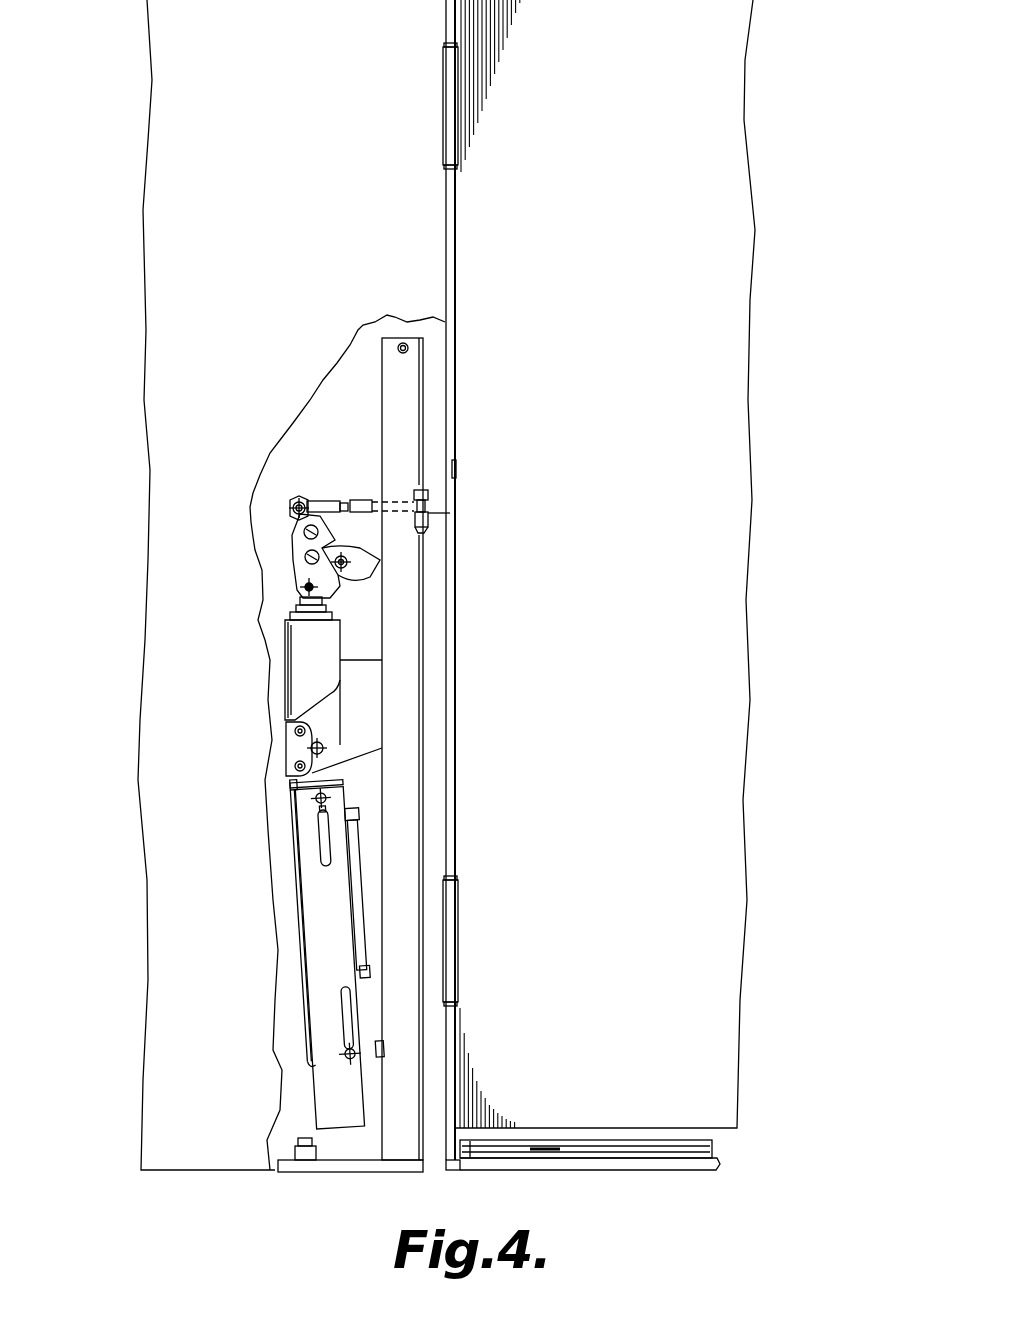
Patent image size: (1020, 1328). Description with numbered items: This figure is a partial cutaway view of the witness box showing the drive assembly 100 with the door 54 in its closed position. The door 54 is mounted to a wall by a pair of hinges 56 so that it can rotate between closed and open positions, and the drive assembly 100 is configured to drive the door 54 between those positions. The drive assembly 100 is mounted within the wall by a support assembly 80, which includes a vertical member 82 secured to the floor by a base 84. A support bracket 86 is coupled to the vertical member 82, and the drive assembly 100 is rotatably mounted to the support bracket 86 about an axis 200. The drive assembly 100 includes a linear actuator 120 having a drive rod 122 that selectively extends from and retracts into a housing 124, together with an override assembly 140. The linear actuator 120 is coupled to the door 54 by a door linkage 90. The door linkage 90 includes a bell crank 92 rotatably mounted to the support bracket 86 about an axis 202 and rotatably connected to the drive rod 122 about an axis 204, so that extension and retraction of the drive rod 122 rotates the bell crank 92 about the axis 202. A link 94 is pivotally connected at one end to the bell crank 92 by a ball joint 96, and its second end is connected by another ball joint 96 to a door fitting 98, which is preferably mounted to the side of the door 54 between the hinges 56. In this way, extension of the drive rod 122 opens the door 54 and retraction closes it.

The door 54 is at (718, 130).
The hinges 56 is at (449, 92).
The support assembly 80 is at (375, 385).
The vertical member 82 is at (362, 340).
The base 84 is at (348, 1162).
The support bracket 86 is at (356, 765).
The door linkage 90 is at (250, 492).
The bell crank 92 is at (300, 536).
The link 94 is at (340, 497).
The ball joint 96 is at (295, 500).
The door fitting 98 is at (457, 468).
The drive assembly 100 is at (222, 846).
The linear actuator 120 is at (262, 670).
The drive rod 122 is at (298, 603).
The housing 124 is at (290, 646).
The override assembly 140 is at (288, 985).
The axis 200 is at (298, 748).
The axis 202 is at (345, 565).
The axis 204 is at (305, 586).